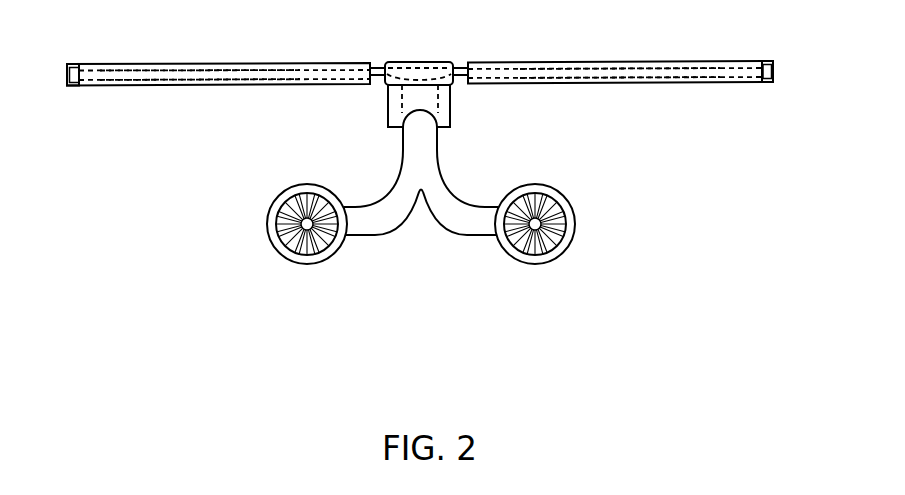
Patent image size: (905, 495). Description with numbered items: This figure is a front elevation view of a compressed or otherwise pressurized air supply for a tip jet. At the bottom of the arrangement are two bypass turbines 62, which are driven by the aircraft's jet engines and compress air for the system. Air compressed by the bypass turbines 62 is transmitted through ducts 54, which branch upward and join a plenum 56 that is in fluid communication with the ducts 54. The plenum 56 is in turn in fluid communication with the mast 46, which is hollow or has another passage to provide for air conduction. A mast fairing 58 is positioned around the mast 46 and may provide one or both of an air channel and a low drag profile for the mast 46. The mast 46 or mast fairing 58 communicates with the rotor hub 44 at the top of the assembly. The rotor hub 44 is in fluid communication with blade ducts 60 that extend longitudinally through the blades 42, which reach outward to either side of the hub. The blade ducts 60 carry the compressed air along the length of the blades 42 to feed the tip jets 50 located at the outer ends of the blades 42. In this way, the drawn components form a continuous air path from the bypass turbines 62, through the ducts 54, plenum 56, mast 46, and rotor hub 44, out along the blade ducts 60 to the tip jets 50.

The blades 42 is at (219, 63).
The rotor hub 44 is at (421, 62).
The mast 46 is at (443, 102).
The tip jets 50 is at (67, 74).
The ducts 54 is at (381, 201).
The plenum 56 is at (432, 141).
The mast fairing 58 is at (389, 105).
The blade ducts 60 is at (158, 81).
The bypass turbine 62 is at (283, 218).